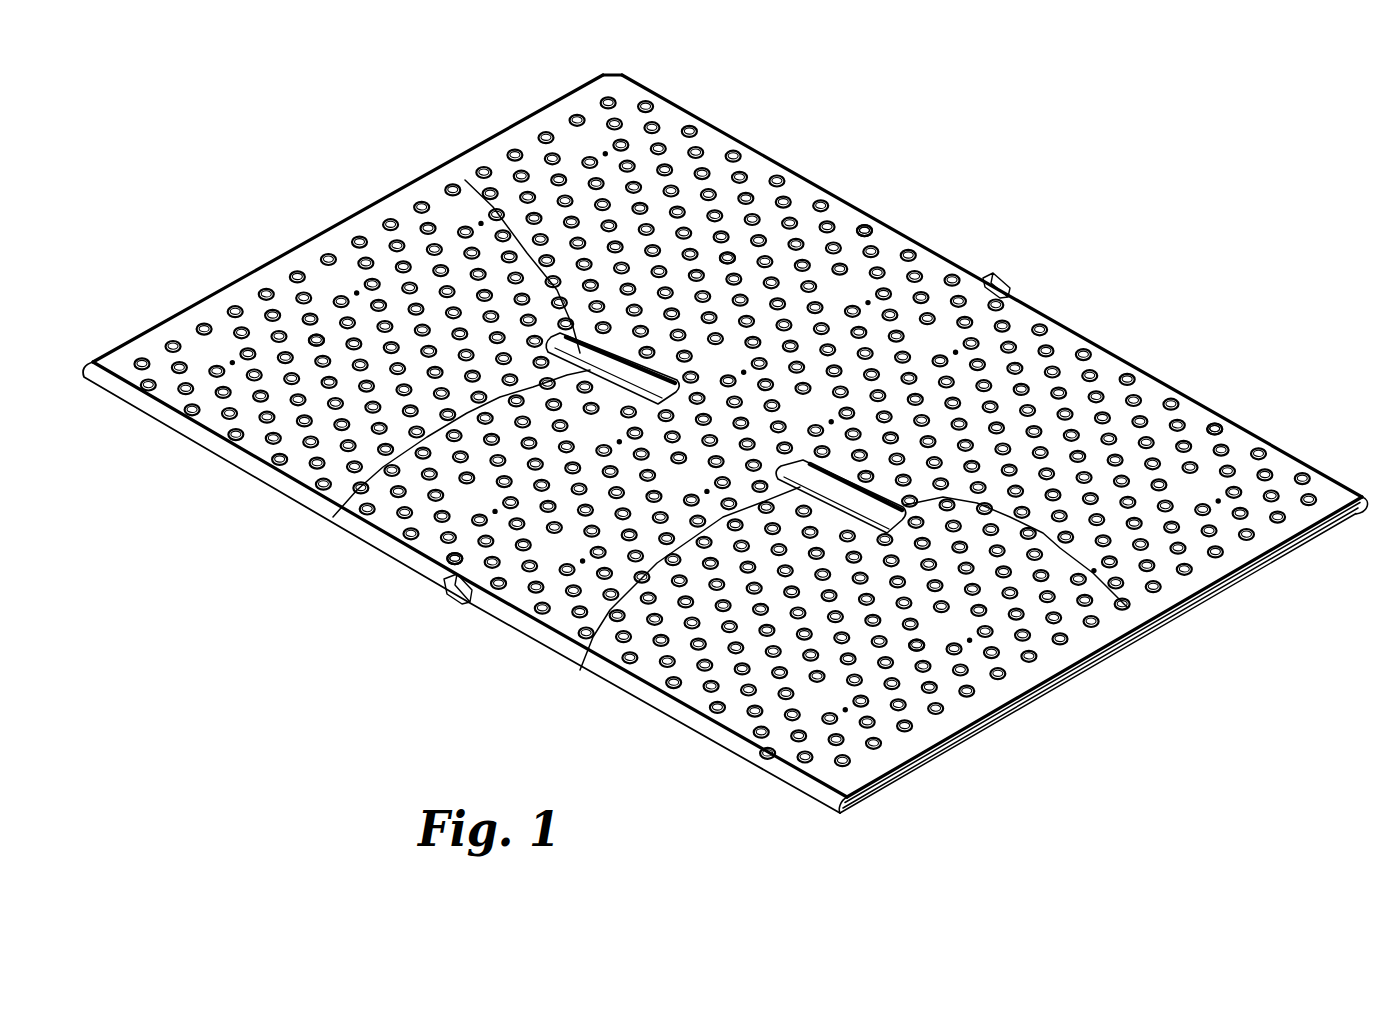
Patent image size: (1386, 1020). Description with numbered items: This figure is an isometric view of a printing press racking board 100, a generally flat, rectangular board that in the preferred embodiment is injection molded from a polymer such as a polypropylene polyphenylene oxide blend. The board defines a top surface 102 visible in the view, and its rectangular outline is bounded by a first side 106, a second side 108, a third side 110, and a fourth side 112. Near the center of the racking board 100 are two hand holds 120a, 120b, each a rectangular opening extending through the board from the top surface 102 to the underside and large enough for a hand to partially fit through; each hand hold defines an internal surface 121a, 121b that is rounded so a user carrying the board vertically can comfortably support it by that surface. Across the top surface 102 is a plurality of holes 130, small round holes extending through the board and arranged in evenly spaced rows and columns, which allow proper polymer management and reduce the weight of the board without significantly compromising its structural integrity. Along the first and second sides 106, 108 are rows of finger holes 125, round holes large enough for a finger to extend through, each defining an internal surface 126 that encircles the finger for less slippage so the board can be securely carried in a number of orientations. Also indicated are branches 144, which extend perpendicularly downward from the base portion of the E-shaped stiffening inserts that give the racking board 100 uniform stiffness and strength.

The printing press racking board 100 is at (1049, 144).
The top surface 102 is at (633, 165).
The first side 106 is at (1095, 344).
The second side 108 is at (689, 703).
The third side 110 is at (1090, 668).
The fourth side 112 is at (336, 224).
The hand hold 120a is at (1127, 607).
The hand hold 120b is at (465, 180).
The internal surface 121a is at (580, 670).
The internal surface 121b is at (333, 517).
The finger hole 125 is at (866, 224).
The internal surface 126 is at (870, 224).
The hole 130 is at (309, 338).
The branch 144 is at (834, 419).